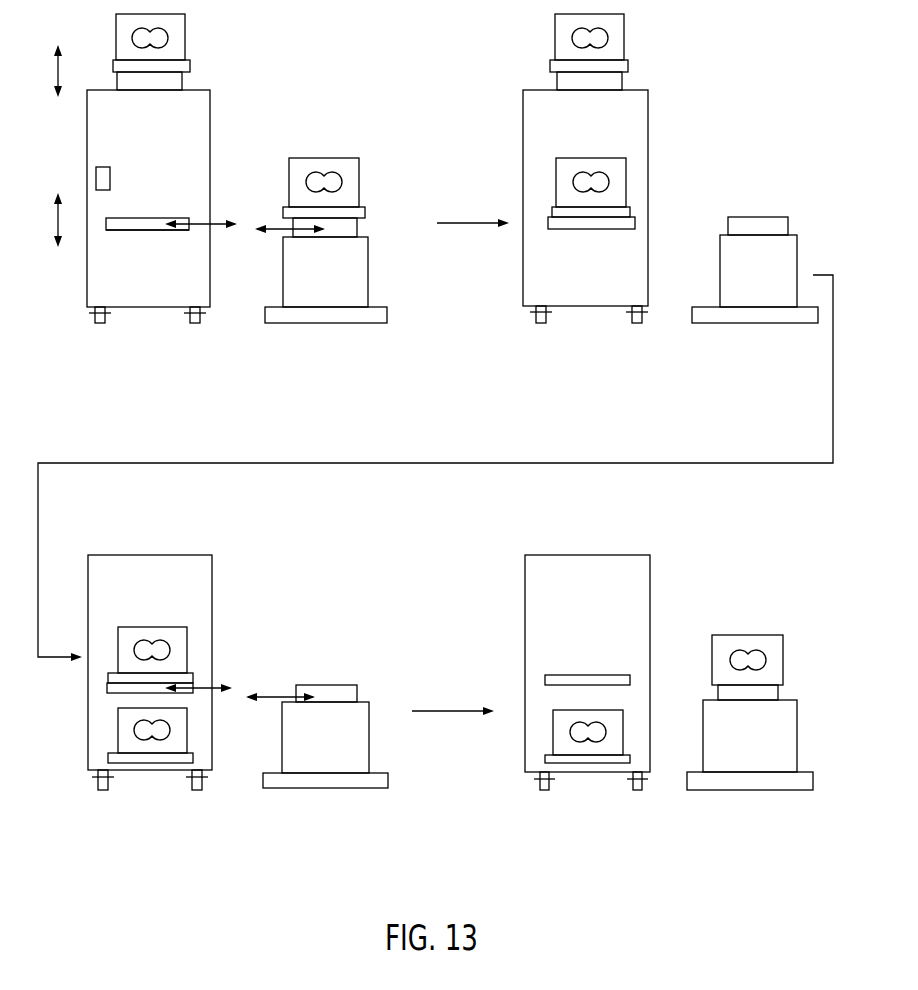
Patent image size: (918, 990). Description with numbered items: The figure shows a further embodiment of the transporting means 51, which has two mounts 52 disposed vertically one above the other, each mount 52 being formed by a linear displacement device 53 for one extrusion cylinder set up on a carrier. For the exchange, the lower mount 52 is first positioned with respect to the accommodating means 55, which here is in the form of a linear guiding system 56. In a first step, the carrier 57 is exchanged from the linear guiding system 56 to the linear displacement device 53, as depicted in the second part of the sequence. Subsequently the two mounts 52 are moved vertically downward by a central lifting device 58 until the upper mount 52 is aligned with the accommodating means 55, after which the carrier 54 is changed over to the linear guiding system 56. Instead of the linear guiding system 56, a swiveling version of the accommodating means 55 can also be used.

The transporting means 51 is at (229, 117).
The mount 52 is at (199, 65).
The linear displacement device 53 is at (183, 80).
The carrier 54 is at (113, 65).
The accommodating means 55 is at (374, 227).
The linear guiding system 56 is at (346, 222).
The carrier 57 is at (357, 213).
The central lifting device 58 is at (96, 178).